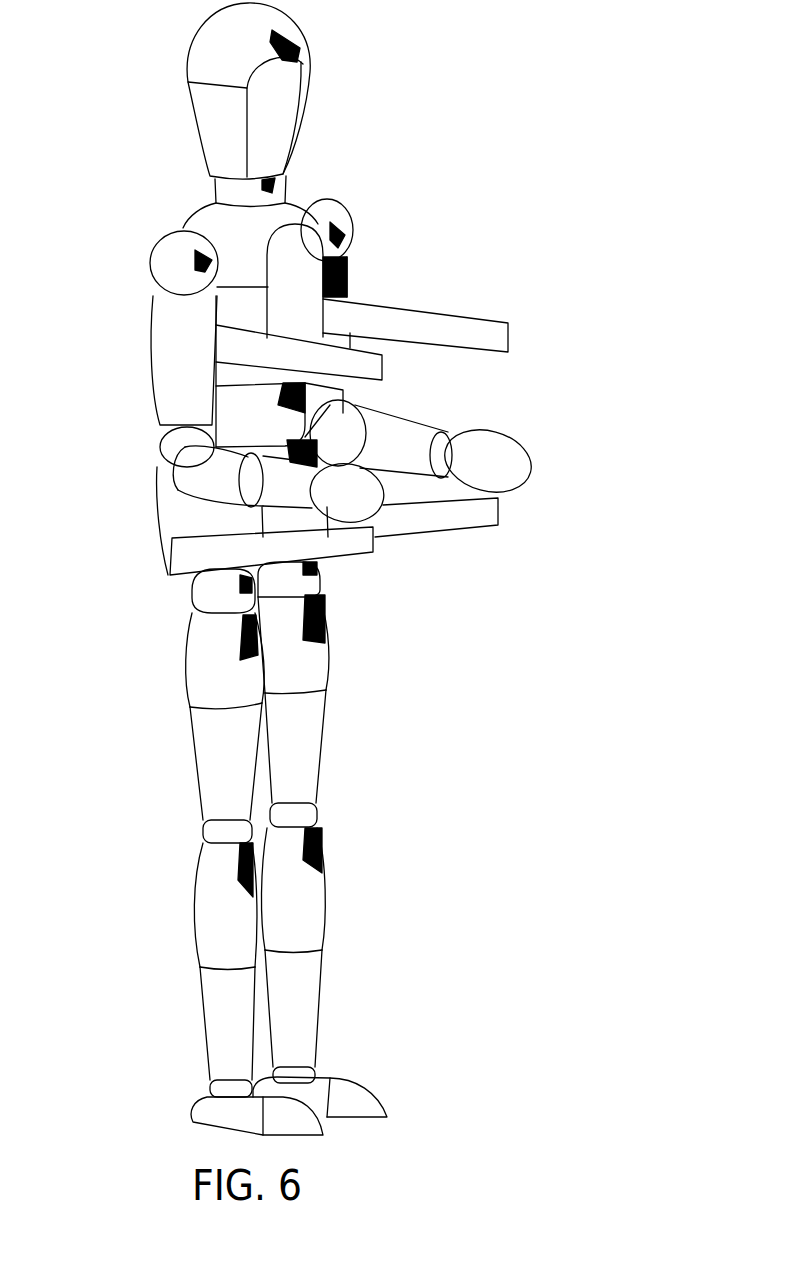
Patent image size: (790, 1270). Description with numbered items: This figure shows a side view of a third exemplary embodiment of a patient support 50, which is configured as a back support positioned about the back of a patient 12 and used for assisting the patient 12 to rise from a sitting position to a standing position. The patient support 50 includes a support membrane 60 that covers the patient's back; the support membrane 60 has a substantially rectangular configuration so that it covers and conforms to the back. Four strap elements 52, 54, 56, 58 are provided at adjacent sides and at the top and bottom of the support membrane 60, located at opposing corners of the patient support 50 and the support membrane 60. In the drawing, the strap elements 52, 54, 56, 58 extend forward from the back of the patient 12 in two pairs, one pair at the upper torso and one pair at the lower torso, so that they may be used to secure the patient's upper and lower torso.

The patient 12 is at (410, 48).
The patient support 50 is at (512, 230).
The strap element 52 is at (493, 342).
The strap element 54 is at (385, 370).
The strap element 56 is at (497, 513).
The strap element 58 is at (373, 553).
The support membrane 60 is at (141, 380).